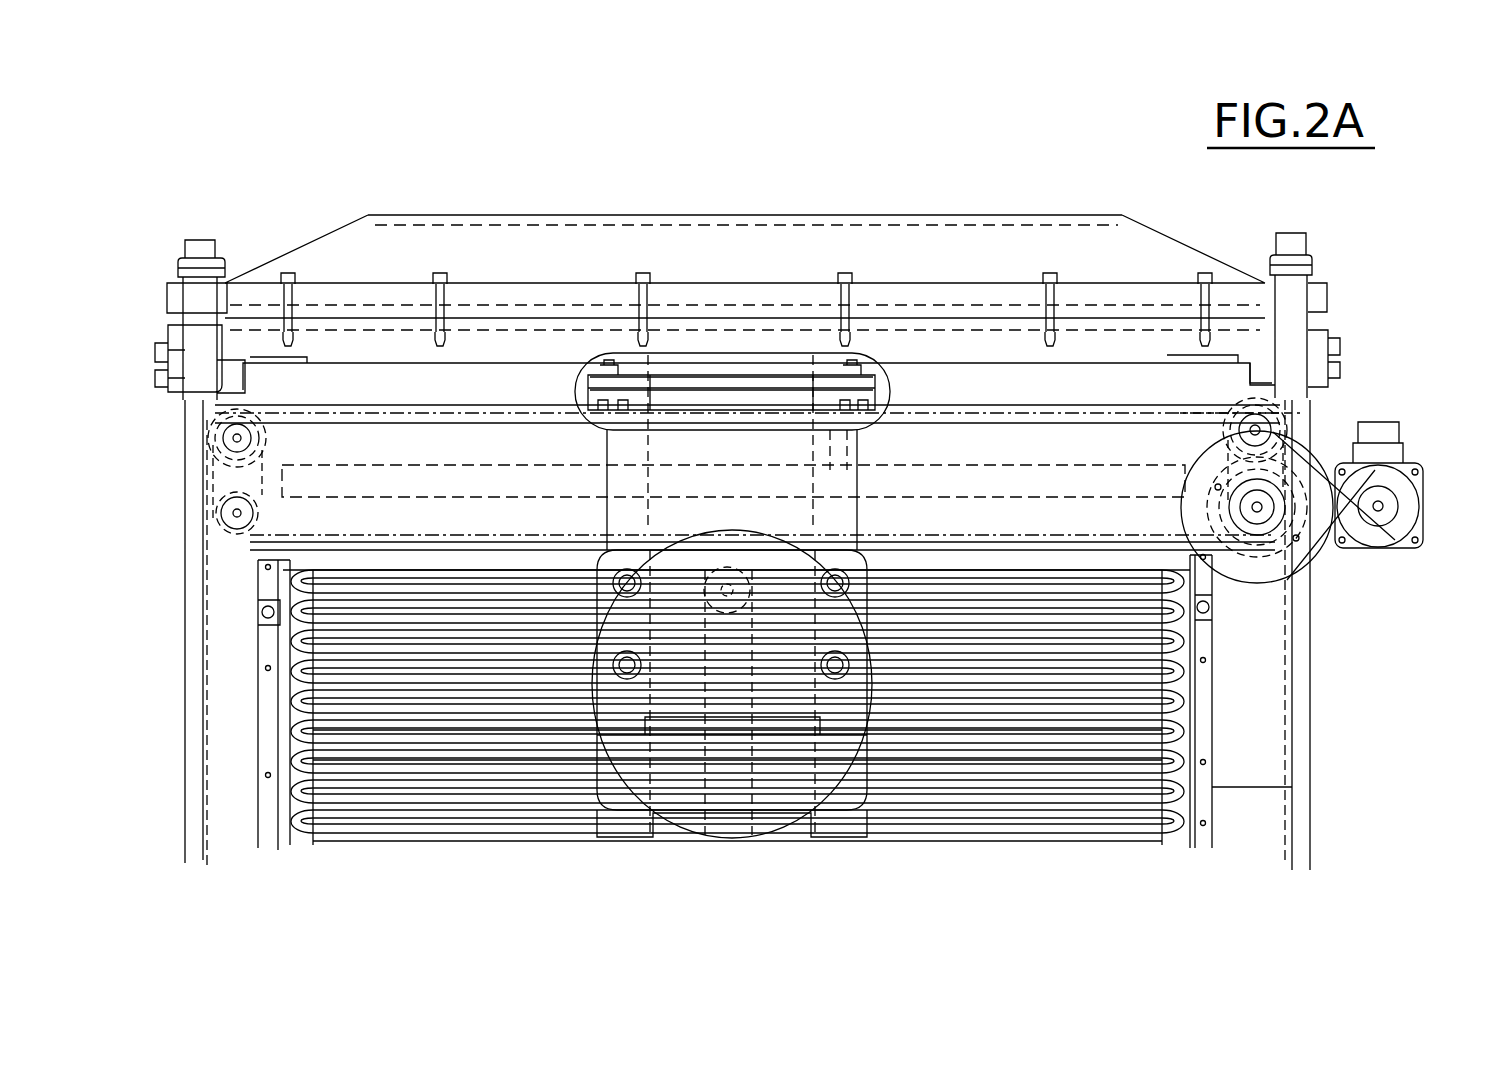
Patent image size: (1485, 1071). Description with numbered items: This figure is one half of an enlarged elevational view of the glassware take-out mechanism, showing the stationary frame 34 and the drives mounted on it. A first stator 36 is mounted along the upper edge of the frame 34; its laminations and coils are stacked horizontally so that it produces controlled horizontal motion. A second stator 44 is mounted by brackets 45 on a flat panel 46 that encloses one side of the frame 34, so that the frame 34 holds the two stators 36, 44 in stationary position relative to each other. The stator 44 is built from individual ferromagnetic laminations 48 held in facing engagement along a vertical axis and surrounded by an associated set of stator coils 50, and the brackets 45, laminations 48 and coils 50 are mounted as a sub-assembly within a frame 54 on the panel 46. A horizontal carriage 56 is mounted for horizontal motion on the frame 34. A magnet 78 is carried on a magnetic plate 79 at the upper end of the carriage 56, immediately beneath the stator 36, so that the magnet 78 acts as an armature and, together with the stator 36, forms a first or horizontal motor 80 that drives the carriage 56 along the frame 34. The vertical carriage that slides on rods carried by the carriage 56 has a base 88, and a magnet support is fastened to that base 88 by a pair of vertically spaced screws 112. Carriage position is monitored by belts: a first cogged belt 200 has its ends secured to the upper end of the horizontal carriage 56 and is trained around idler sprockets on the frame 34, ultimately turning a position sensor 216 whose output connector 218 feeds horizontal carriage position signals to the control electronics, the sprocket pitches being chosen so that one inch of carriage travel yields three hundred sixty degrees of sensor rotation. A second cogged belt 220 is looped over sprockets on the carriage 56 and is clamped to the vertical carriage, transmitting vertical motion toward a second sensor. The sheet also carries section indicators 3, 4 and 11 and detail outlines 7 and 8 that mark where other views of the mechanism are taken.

The section line 3- 3 is at (728, 355).
The view arrow 4 is at (730, 43).
The detail area of FIG. 7 is at (777, 836).
The detail area of FIG. 8 is at (893, 395).
The section line 11- 11 is at (1021, 300).
The rectangular frame 34 is at (1333, 272).
The first stator 36 is at (1097, 322).
The second stator 44 is at (1175, 721).
The brackets 45 is at (428, 560).
The flat panel 46 is at (1272, 640).
The ferromagnetic laminations 48 is at (320, 700).
The stator coils 50 is at (290, 753).
The frame 54 is at (1215, 787).
The horizontal carriage 56 is at (868, 480).
The magnet 78 is at (753, 370).
The magnetic plate 79 is at (782, 378).
The first horizontal motor 80 is at (882, 342).
The base 88 is at (608, 513).
The screws 112 is at (852, 575).
The first cogged belt 200 is at (1300, 420).
The position sensor 216 is at (1420, 533).
The output connector 218 is at (1380, 440).
The second cogged belt 220 is at (702, 792).